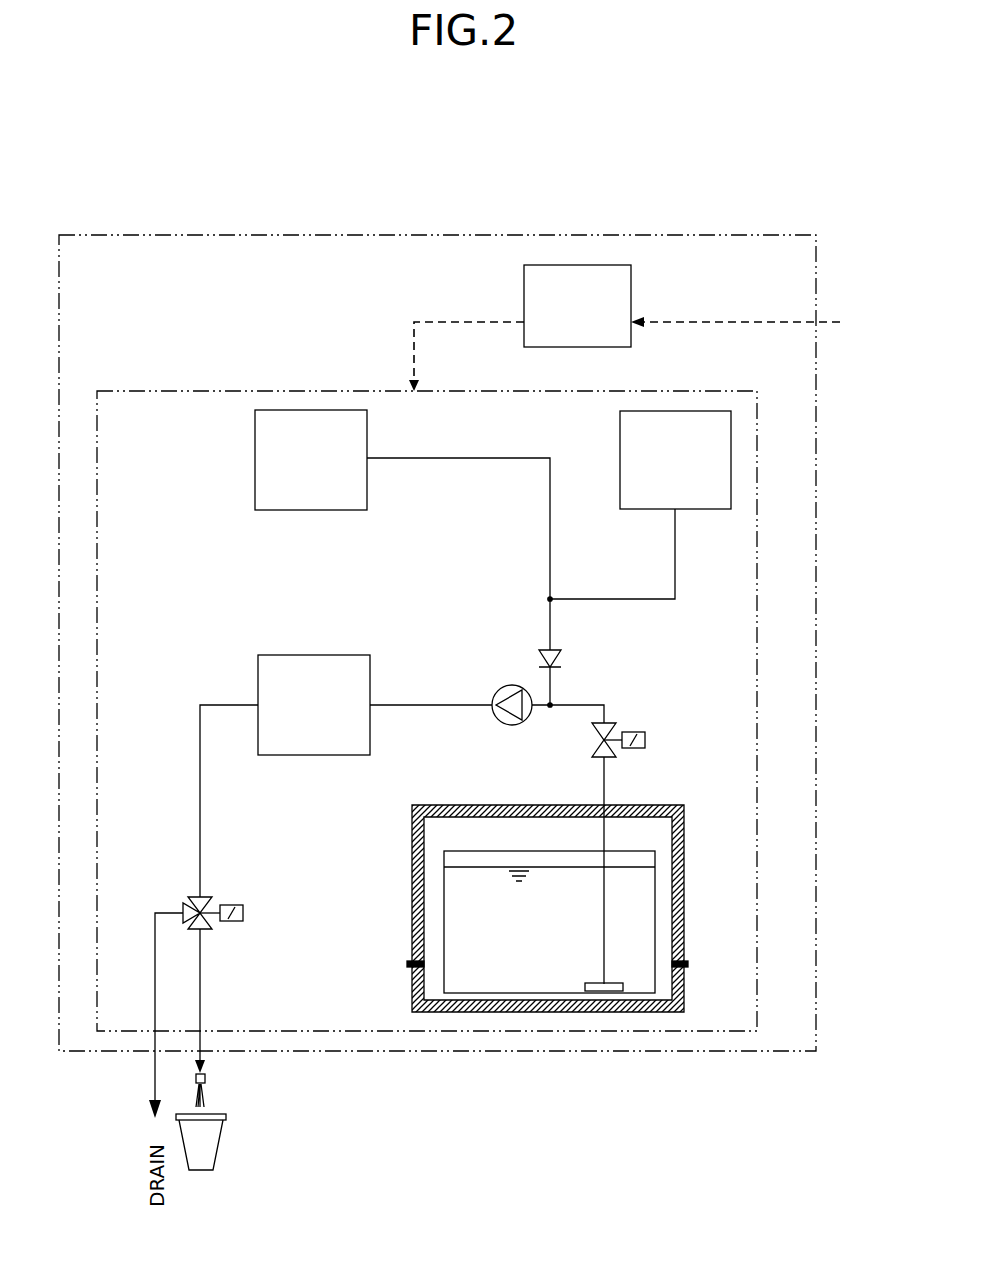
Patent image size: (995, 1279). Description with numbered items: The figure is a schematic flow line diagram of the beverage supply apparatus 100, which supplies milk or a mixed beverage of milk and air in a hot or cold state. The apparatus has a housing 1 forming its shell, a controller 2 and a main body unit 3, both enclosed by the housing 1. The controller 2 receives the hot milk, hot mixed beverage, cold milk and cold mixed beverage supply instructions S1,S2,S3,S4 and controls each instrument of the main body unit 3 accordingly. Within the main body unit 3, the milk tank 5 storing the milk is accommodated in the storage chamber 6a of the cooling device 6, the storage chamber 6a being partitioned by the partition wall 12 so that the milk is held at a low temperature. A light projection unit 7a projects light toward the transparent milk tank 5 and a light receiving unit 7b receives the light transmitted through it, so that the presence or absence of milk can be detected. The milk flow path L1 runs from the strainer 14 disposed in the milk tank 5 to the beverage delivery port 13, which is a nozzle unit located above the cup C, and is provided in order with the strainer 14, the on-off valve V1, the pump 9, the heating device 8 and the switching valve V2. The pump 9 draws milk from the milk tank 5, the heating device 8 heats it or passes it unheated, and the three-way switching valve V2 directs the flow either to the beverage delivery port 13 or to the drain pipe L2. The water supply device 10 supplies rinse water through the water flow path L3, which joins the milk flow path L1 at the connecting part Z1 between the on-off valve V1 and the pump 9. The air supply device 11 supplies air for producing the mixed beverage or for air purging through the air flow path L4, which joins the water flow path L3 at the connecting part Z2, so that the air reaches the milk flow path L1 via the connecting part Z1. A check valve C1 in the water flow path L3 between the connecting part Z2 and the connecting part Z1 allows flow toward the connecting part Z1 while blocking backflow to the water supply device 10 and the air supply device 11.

The beverage supply apparatus 100 is at (110, 178).
The housing 1 is at (279, 233).
The controller 2 is at (524, 303).
The main body unit 3 is at (107, 390).
The milk tank 5 is at (444, 892).
The cooling device 6 is at (720, 850).
The storage chamber 6a is at (562, 846).
The light projection unit 7a is at (407, 964).
The light receiving unit 7b is at (687, 964).
The heating device 8 is at (258, 673).
The pump 9 is at (498, 690).
The water supply device 10 is at (255, 433).
The air supply device 11 is at (620, 433).
The partition wall 12 is at (684, 830).
The beverage delivery port 13 is at (207, 1080).
The strainer 14 is at (610, 992).
The milk flow path L1 is at (398, 707).
The drain pipe L2 is at (155, 962).
The water flow path L3 is at (550, 549).
The air flow path L4 is at (675, 557).
The connecting part Z1 is at (554, 702).
The connecting part Z2 is at (534, 600).
The check valve C1 is at (563, 658).
The on-off valve V1 is at (610, 728).
The switching valve V2 is at (208, 930).
The cup C is at (226, 1134).
The supply instructions S1,S2,S3,S4 is at (735, 339).